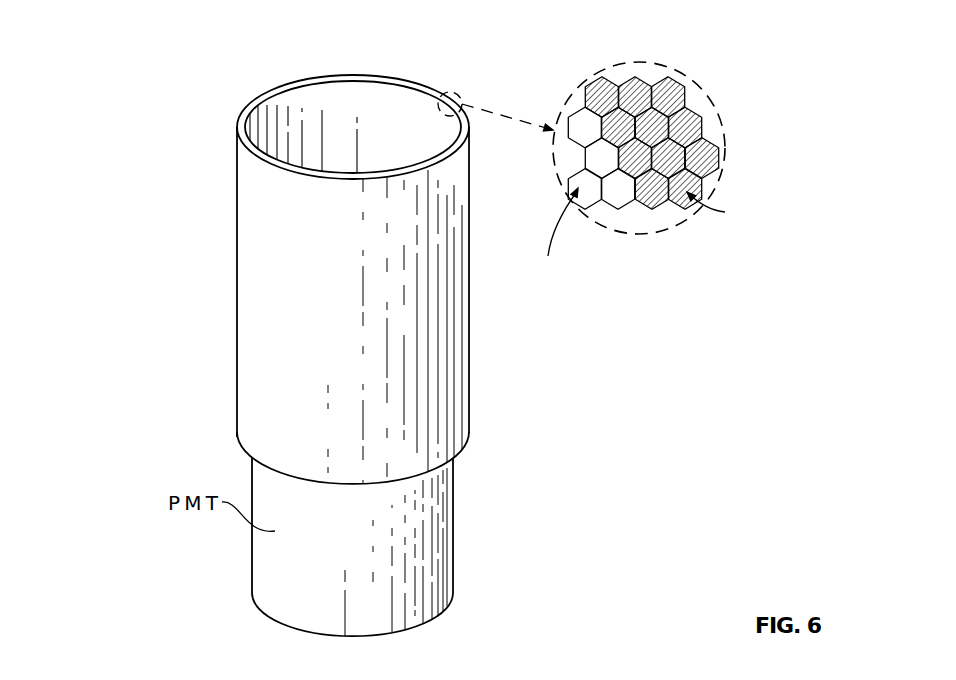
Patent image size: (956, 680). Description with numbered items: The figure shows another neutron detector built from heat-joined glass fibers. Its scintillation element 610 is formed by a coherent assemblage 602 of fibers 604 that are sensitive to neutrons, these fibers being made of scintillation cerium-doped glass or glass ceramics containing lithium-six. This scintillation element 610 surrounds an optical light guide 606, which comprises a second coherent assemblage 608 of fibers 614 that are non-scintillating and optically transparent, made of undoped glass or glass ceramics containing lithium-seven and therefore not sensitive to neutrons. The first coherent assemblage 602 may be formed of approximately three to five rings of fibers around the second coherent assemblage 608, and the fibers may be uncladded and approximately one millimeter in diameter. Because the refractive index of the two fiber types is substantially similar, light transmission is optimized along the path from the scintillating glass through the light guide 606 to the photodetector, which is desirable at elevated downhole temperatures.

The coherent assemblage 602 is at (737, 40).
The fibers 604 is at (672, 88).
The optical light guide 606 is at (273, 138).
The second coherent assemblage 608 is at (566, 158).
The scintillation element 610 is at (253, 103).
The fibers 614 is at (623, 187).